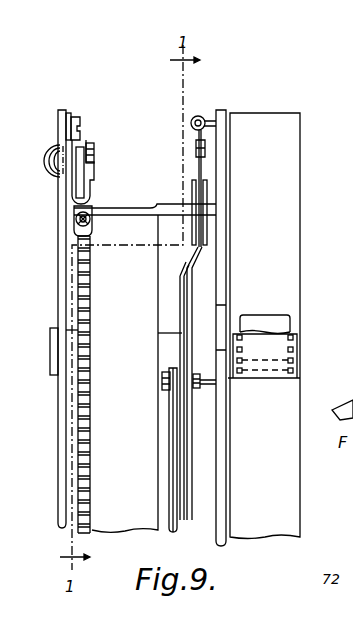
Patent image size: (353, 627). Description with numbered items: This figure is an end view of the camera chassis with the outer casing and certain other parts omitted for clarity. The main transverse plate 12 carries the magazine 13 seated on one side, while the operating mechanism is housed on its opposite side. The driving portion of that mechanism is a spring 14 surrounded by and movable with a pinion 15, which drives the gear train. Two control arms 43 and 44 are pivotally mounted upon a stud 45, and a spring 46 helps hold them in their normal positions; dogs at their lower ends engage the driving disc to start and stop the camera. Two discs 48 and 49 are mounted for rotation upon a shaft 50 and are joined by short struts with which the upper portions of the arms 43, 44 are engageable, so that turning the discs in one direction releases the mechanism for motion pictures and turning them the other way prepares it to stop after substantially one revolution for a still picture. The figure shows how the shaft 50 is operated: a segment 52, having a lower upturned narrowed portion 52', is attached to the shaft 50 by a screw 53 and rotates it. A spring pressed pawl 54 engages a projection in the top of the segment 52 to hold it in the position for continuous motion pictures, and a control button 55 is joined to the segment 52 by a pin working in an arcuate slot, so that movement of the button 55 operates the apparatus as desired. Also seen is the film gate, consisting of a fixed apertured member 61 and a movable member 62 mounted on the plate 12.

The main transverse plate 12 is at (223, 112).
The magazine 13 is at (265, 326).
The spring 14 is at (137, 373).
The pinion 15 is at (91, 523).
The control arm 43 is at (189, 280).
The control arm 44 is at (197, 150).
The stud 45 is at (162, 384).
The spring 46 is at (198, 117).
The disc 48 is at (191, 189).
The disc 49 is at (208, 196).
The shaft 50 is at (130, 212).
The segment 52 is at (51, 172).
The lower upturned narrowed portion 52' is at (99, 172).
The screw 53 is at (78, 219).
The spring pressed pawl 54 is at (82, 138).
The control button 55 is at (47, 163).
The fixed apertured member 61 is at (282, 349).
The movable member 62 is at (283, 323).